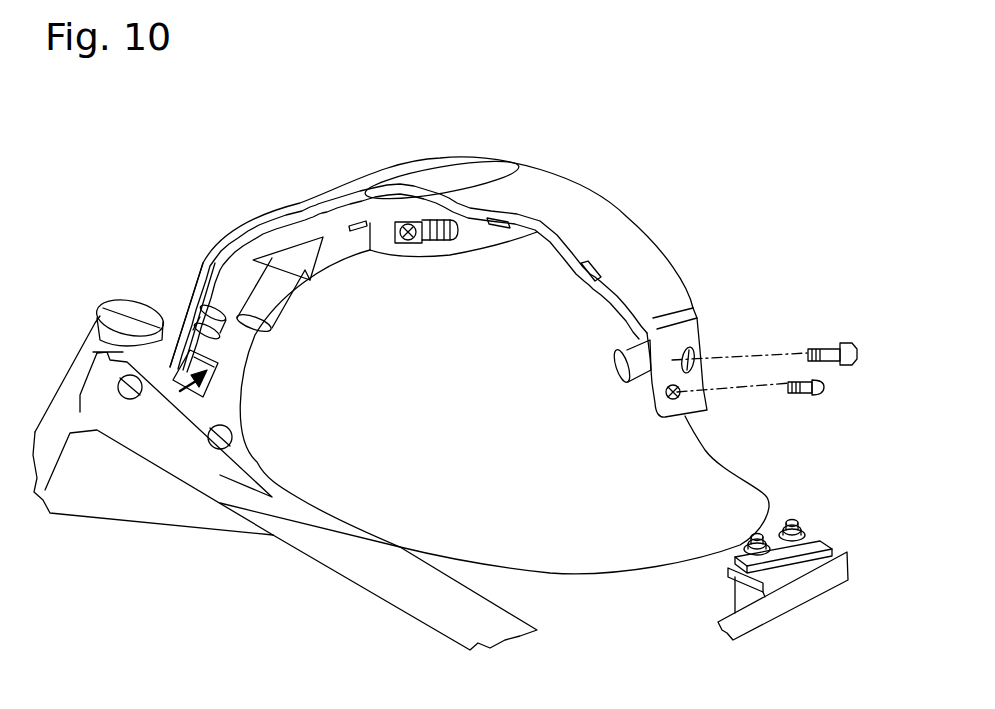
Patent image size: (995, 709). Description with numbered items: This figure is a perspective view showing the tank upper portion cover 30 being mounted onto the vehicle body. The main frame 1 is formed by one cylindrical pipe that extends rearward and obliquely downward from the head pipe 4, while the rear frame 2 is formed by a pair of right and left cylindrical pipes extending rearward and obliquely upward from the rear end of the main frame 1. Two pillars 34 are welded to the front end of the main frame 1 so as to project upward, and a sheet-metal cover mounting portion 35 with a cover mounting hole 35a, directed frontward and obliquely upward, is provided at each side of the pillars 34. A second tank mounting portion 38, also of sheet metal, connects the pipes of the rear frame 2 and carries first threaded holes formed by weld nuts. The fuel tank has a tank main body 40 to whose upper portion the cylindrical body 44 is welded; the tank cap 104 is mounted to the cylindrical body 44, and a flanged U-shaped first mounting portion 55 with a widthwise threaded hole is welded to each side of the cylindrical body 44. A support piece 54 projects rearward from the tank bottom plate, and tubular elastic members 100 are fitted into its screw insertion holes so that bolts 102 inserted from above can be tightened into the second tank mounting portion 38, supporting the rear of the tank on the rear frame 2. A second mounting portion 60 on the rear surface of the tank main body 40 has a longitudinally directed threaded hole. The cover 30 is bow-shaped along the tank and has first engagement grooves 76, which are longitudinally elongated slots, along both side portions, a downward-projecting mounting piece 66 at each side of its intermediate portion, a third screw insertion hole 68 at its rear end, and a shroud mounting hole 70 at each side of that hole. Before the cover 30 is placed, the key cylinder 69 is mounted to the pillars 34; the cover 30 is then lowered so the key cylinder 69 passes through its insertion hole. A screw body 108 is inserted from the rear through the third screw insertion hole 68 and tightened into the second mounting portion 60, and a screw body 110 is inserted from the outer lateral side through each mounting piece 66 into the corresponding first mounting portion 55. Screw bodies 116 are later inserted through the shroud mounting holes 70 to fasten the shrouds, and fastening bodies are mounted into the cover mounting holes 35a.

The main frame 1 is at (370, 577).
The rear frame 2 is at (777, 607).
The head pipe 4 is at (88, 355).
The tank upper portion cover 30 is at (665, 267).
The pillars 34 is at (182, 330).
The cover mounting portion 35 is at (195, 390).
The cover mounting hole 35a is at (192, 393).
The second tank mounting portion 38 is at (738, 590).
The tank main body 40 is at (685, 462).
The cylindrical body 44 is at (498, 238).
The support piece 54 is at (793, 553).
The first mounting portion 55 is at (438, 227).
The second mounting portion 60 is at (637, 360).
The mounting piece 66 is at (385, 217).
The third screw insertion hole 68 is at (693, 350).
The key cylinder 69 is at (257, 287).
The shroud mounting hole 70 is at (687, 402).
The first engagement grooves 76 is at (350, 200).
The elastic members 100 is at (803, 535).
The bolts 102 is at (788, 525).
The tank cap 104 is at (462, 178).
The screw body 108 is at (848, 347).
The screw body 110 is at (412, 227).
The screw bodies 116 is at (817, 392).